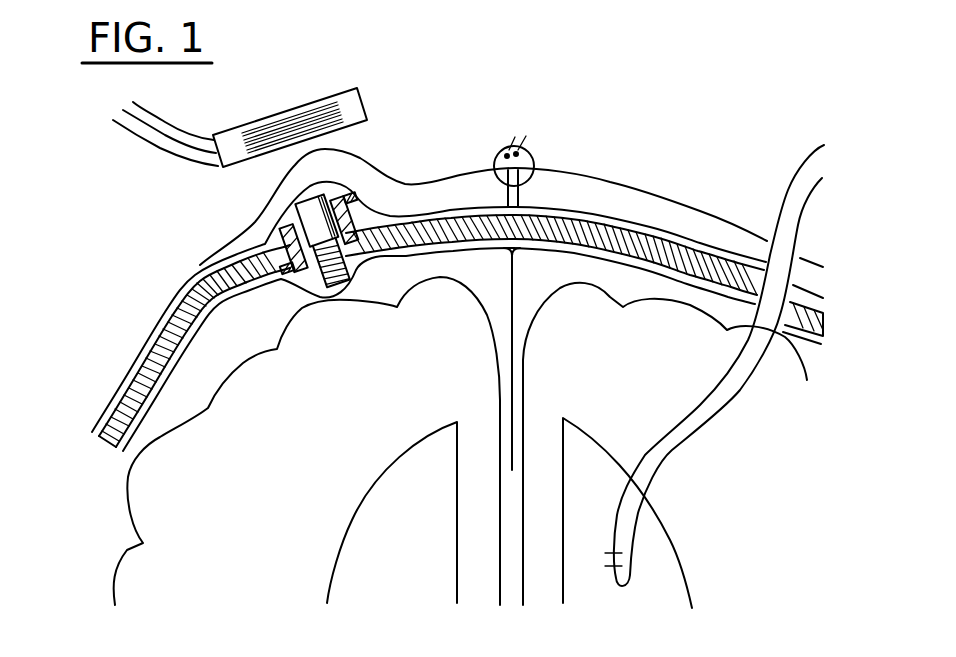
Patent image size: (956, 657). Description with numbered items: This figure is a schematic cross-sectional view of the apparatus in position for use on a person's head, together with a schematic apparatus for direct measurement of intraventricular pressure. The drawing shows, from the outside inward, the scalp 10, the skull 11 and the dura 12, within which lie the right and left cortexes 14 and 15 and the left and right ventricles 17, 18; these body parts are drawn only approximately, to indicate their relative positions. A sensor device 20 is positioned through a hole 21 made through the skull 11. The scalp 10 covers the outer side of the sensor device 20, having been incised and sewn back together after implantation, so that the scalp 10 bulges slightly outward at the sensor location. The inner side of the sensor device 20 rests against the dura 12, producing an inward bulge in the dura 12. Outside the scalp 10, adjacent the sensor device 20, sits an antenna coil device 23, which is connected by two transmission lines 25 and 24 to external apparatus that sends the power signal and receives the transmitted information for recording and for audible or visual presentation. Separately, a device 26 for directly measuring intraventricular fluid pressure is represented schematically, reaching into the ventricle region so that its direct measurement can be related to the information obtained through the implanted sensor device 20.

The scalp 10 is at (83, 380).
The skull 11 is at (102, 440).
The dura 12 is at (123, 450).
The right cortex 14 is at (270, 393).
The left cortex 15 is at (642, 353).
The left ventricle 17 is at (408, 571).
The right ventricle 18 is at (602, 505).
The sensor device 20 is at (306, 219).
The hole 21 is at (293, 210).
The antenna coil device 23 is at (365, 105).
The transmission line 24 is at (143, 147).
The transmission line 25 is at (180, 133).
The device for directly measuring intraventricular fluid pressure 26 is at (632, 576).